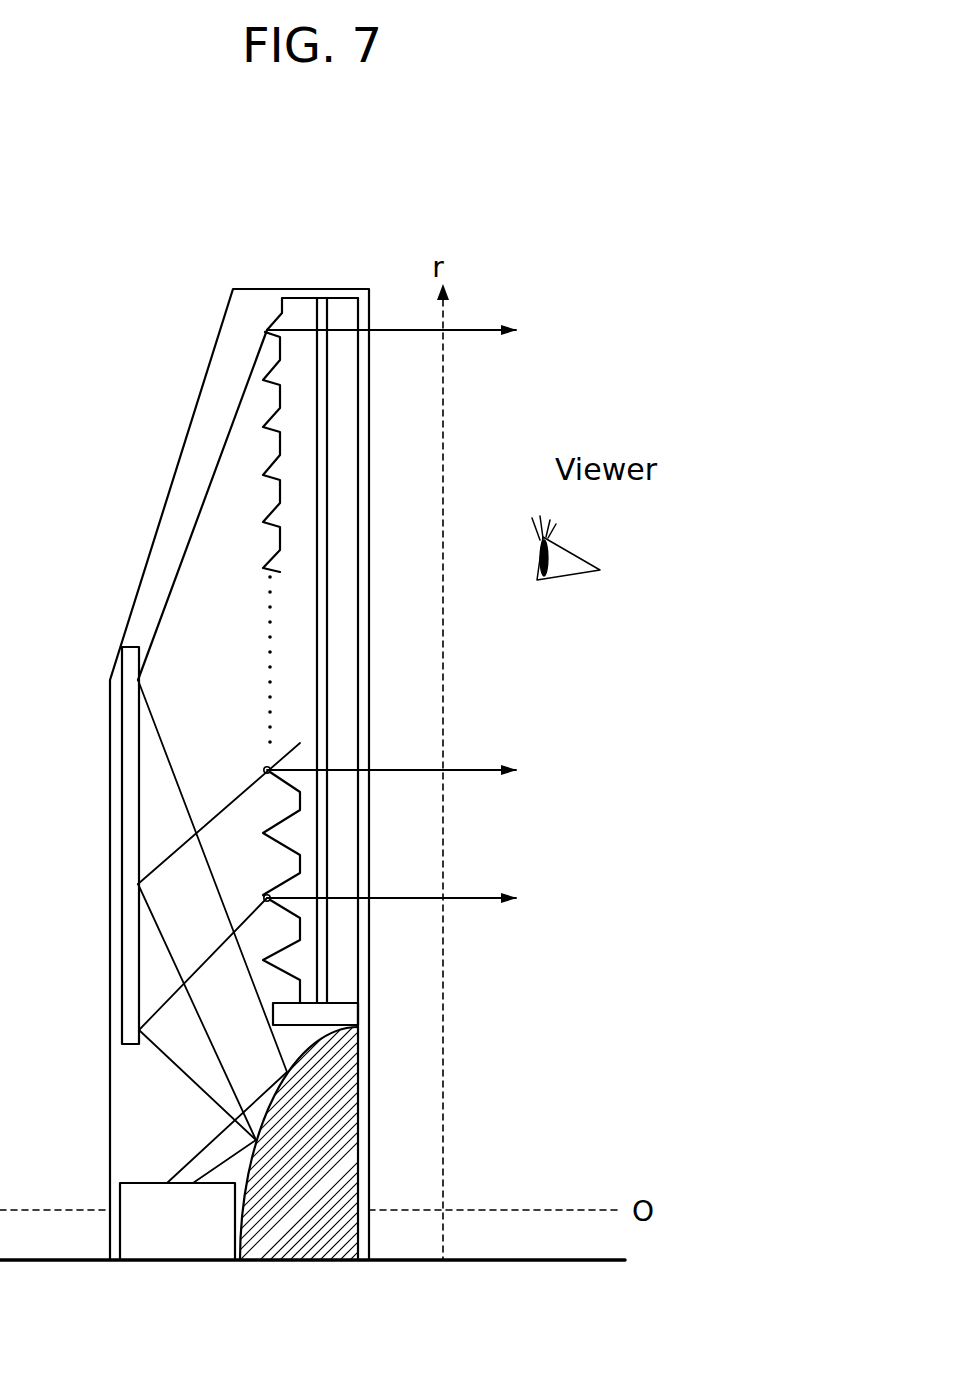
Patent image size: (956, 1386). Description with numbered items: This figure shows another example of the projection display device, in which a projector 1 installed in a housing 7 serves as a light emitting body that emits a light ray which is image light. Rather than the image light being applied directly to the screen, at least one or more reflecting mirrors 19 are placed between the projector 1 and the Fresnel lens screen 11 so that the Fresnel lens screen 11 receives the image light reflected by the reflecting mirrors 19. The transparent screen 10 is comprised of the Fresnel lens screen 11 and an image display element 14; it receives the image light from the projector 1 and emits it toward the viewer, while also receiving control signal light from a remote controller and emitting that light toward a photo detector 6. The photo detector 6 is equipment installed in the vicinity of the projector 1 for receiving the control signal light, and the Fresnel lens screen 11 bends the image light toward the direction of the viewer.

The projector 1 is at (313, 1262).
The photo detector 6 is at (330, 1015).
The housing 7 is at (160, 522).
The transparent screen 10 is at (311, 575).
The Fresnel lens screen 11 is at (302, 322).
The image display element 14 is at (345, 615).
The reflecting mirror 19 is at (123, 813).